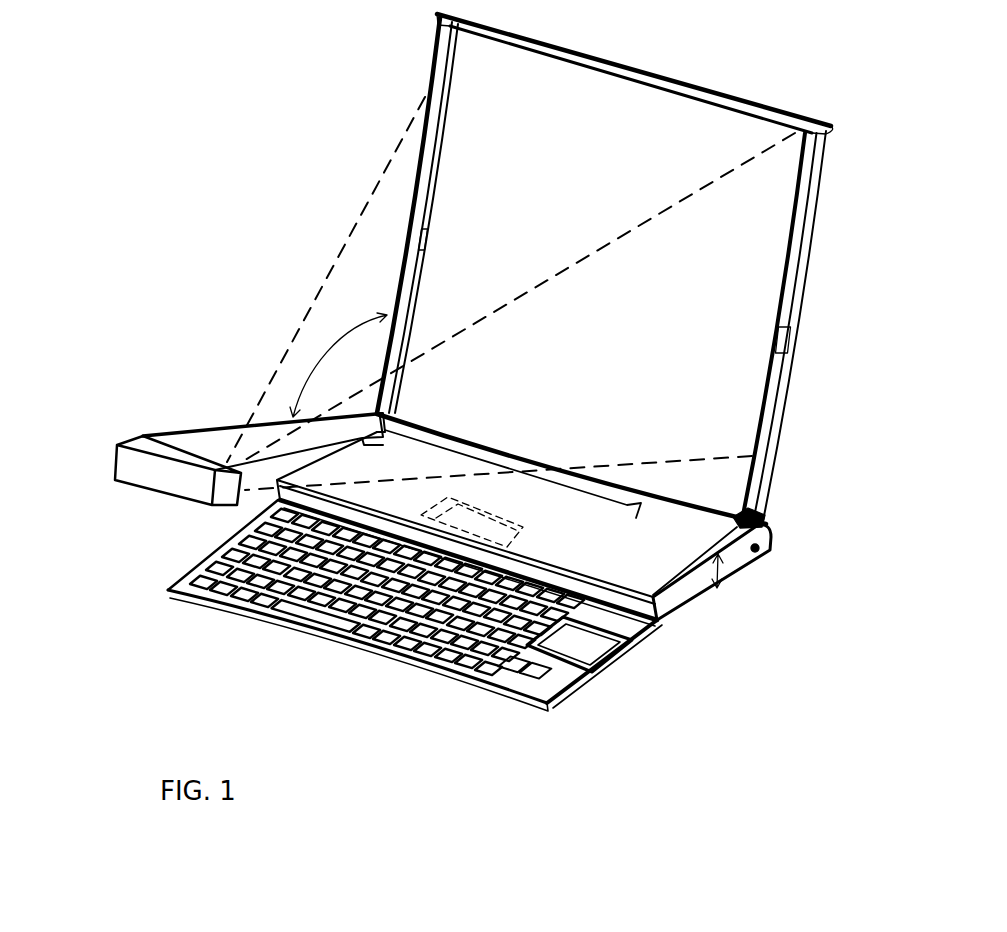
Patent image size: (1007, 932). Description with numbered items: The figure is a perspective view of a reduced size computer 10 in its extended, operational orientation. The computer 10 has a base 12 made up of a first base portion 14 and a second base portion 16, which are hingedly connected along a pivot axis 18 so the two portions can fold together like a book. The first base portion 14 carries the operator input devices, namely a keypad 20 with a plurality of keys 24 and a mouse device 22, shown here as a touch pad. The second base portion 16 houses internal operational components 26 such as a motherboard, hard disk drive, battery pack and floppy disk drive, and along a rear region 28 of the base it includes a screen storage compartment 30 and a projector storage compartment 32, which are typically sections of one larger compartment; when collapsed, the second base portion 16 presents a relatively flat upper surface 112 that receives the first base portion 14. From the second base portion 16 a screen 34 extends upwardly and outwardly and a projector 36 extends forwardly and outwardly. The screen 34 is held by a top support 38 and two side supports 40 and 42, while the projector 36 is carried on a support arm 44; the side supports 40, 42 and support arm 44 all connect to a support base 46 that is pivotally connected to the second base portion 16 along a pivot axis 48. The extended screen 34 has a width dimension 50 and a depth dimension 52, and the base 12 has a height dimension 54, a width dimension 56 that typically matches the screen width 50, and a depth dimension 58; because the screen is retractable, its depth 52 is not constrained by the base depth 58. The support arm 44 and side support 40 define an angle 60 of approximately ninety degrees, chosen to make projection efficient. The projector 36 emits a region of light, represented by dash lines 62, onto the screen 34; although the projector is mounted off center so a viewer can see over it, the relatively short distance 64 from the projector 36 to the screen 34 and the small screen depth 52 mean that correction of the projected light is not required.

The computer 10 is at (736, 47).
The base 12 is at (693, 600).
The first base portion 14 is at (605, 668).
The second base portion 16 is at (743, 575).
The pivot axis 18 is at (683, 618).
The keypad 20 is at (380, 652).
The mouse device 22 is at (530, 668).
The keys 24 is at (437, 674).
The internal operational components 26 is at (508, 507).
The rear region 28 is at (540, 446).
The screen storage compartment 30 is at (630, 493).
The projector storage compartment 32 is at (703, 537).
The screen 34 is at (712, 383).
The projector 36 is at (180, 483).
The top support 38 is at (567, 50).
The side support 40 is at (423, 187).
The side support 42 is at (787, 293).
The support arm 44 is at (205, 428).
The support base 46 is at (445, 438).
The pivot axis 48 is at (767, 551).
The width dimension 50 is at (464, 61).
The depth dimension 52 is at (654, 95).
The height dimension 54 is at (722, 576).
The width dimension 56 is at (156, 611).
The depth dimension 58 is at (853, 595).
The angle 60 is at (346, 330).
The dash lines 62 is at (372, 188).
The distance 64 is at (377, 357).
The upper surface 112 is at (633, 574).